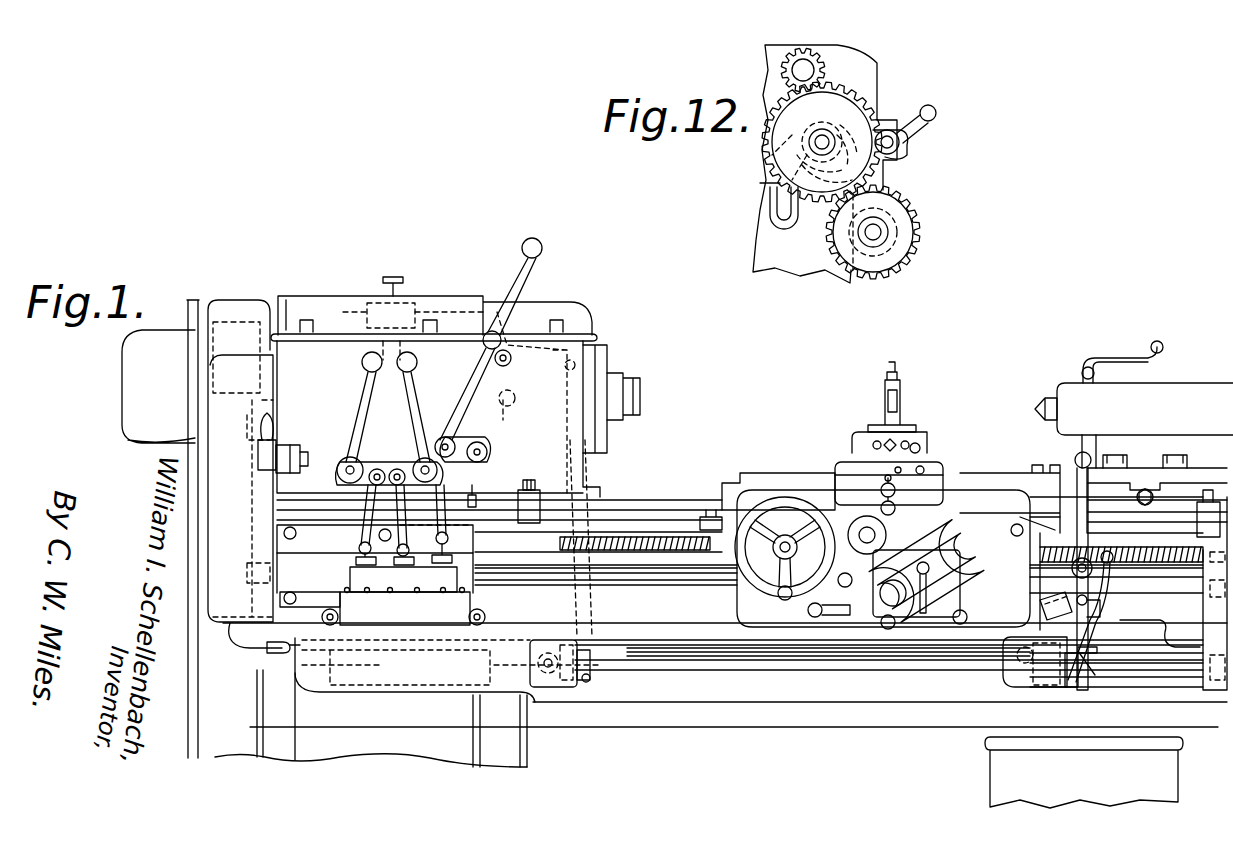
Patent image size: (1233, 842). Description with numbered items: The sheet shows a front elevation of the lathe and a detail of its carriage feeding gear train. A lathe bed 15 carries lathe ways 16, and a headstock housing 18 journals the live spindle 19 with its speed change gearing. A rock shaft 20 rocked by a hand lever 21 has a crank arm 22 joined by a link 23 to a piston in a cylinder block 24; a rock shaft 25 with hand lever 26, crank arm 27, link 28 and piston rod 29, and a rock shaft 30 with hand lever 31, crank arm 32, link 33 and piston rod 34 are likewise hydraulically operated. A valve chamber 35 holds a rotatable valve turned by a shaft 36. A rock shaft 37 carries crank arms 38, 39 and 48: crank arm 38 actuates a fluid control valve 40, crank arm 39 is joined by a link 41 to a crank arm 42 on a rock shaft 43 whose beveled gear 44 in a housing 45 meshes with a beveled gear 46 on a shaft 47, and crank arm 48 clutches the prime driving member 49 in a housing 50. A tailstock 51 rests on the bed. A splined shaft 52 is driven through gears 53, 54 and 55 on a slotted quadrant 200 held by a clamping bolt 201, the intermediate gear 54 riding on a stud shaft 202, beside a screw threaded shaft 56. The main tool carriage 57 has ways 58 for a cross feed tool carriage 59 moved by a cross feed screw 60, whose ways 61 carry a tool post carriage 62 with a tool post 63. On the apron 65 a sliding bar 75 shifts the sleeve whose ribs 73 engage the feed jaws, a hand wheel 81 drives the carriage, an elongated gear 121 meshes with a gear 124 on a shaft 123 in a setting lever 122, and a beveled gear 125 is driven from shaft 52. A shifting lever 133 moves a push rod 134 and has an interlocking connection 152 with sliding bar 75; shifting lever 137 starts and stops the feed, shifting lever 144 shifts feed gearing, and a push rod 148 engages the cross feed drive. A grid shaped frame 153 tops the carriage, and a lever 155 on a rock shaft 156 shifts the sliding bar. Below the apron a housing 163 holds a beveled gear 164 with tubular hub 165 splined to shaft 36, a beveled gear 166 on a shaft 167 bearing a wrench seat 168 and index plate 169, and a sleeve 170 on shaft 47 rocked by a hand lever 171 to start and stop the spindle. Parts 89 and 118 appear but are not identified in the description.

In FIG. 12, the lathe bed 15 is at (757, 238).
In FIG. 1, the lathe bed 15 is at (640, 625).
In FIG. 1, the lathe ways 16 is at (645, 497).
In FIG. 12, the headstock housing 18 is at (880, 78).
In FIG. 1, the headstock housing 18 is at (325, 352).
In FIG. 12, the live spindle 19 is at (808, 67).
In FIG. 1, the live spindle 19 is at (650, 372).
In FIG. 1, the rock shaft 20 is at (340, 454).
In FIG. 1, the hand lever 21 is at (360, 390).
In FIG. 1, the crank arm 22 is at (372, 455).
In FIG. 1, the link 23 is at (355, 488).
In FIG. 1, the cylinder block 24 is at (346, 602).
In FIG. 1, the rock shaft 25 is at (425, 440).
In FIG. 1, the hand lever 26 is at (413, 395).
In FIG. 1, the crank arm 27 is at (400, 468).
In FIG. 1, the link 28 is at (415, 516).
In FIG. 1, the piston rod 29 is at (405, 580).
In FIG. 1, the rock shaft 30 is at (487, 455).
In FIG. 1, the hand lever 31 is at (482, 392).
In FIG. 1, the crank arm 32 is at (475, 437).
In FIG. 1, the link 33 is at (490, 500).
In FIG. 1, the piston rod 34 is at (462, 560).
In FIG. 1, the valve chamber 35 is at (380, 670).
In FIG. 1, the shaft 36 is at (700, 655).
In FIG. 1, the rock shaft 37 is at (512, 362).
In FIG. 1, the crank arm 38 is at (500, 318).
In FIG. 1, the crank arm 39 is at (577, 348).
In FIG. 1, the fluid control valve 40 is at (405, 291).
In FIG. 1, the link 41 is at (590, 603).
In FIG. 1, the crank arm 42 is at (580, 690).
In FIG. 1, the rock shaft 43 is at (535, 662).
In FIG. 1, the beveled gear 44 is at (540, 680).
In FIG. 1, the housing 45 is at (568, 688).
In FIG. 1, the beveled gear 46 is at (560, 690).
In FIG. 1, the shaft 47 is at (790, 670).
In FIG. 1, the crank arm 48 is at (517, 392).
In FIG. 1, the prime driving member 49 is at (208, 385).
In FIG. 1, the housing 50 is at (226, 294).
In FIG. 1, the tailstock 51 is at (1057, 378).
In FIG. 12, the splined shaft 52 is at (880, 232).
In FIG. 1, the splined shaft 52 is at (245, 572).
In FIG. 12, the gear 53 is at (782, 58).
In FIG. 1, the gear 53 is at (262, 400).
In FIG. 12, the intermediate gear 54 is at (870, 106).
In FIG. 1, the intermediate gear 54 is at (255, 505).
In FIG. 12, the gear 55 is at (922, 220).
In FIG. 1, the gear 55 is at (262, 545).
In FIG. 1, the screw threaded shaft 56 is at (612, 528).
In FIG. 1, the main tool carriage 57 is at (745, 482).
In FIG. 1, the ways 58 is at (918, 476).
In FIG. 1, the cross feed tool carriage 59 is at (832, 466).
In FIG. 1, the cross feed screw 60 is at (880, 489).
In FIG. 1, the ways 61 is at (855, 441).
In FIG. 1, the tool post carriage 62 is at (868, 428).
In FIG. 1, the tool post 63 is at (905, 400).
In FIG. 1, the apron 65 is at (768, 627).
In FIG. 1, the ribs 73 is at (1110, 536).
In FIG. 1, the sliding bar 75 is at (706, 515).
In FIG. 1, the hand wheel 81 is at (780, 497).
In FIG. 1, the apron 89 is at (790, 604).
In FIG. 1, the pivot 118 is at (968, 612).
In FIG. 1, the elongated gear 121 is at (540, 494).
In FIG. 1, the setting lever 122 is at (1195, 485).
In FIG. 1, the shaft 123 is at (538, 467).
In FIG. 1, the gear 124 is at (513, 479).
In FIG. 1, the beveled gear 125 is at (1213, 463).
In FIG. 1, the shifting lever 133 is at (1088, 497).
In FIG. 1, the push rod 134 is at (1143, 622).
In FIG. 1, the shifting lever 137 is at (926, 571).
In FIG. 1, the shifting lever 144 is at (887, 630).
In FIG. 1, the push rod 148 is at (875, 533).
In FIG. 1, the interlocking connection 152 is at (1097, 520).
In FIG. 1, the grid shaped frame 153 is at (1035, 515).
In FIG. 1, the manually operable lever 155 is at (998, 520).
In FIG. 1, the rock shaft 156 is at (1015, 523).
In FIG. 1, the housing 163 is at (1018, 680).
In FIG. 1, the beveled gear 164 is at (1025, 688).
In FIG. 1, the tubular hub 165 is at (1005, 685).
In FIG. 1, the beveled gear 166 is at (1080, 655).
In FIG. 1, the shaft 167 is at (1080, 640).
In FIG. 1, the polygonal wrench seat 168 is at (1038, 462).
In FIG. 1, the index plate 169 is at (1032, 470).
In FIG. 1, the sleeve 170 is at (1062, 687).
In FIG. 1, the hand lever 171 is at (1105, 604).
In FIG. 12, the slotted plate or quadrant 200 is at (936, 124).
In FIG. 1, the slotted plate or quadrant 200 is at (258, 481).
In FIG. 12, the clamping bolt 201 is at (912, 122).
In FIG. 1, the clamping bolt 201 is at (294, 452).
In FIG. 12, the stud shaft 202 is at (823, 132).